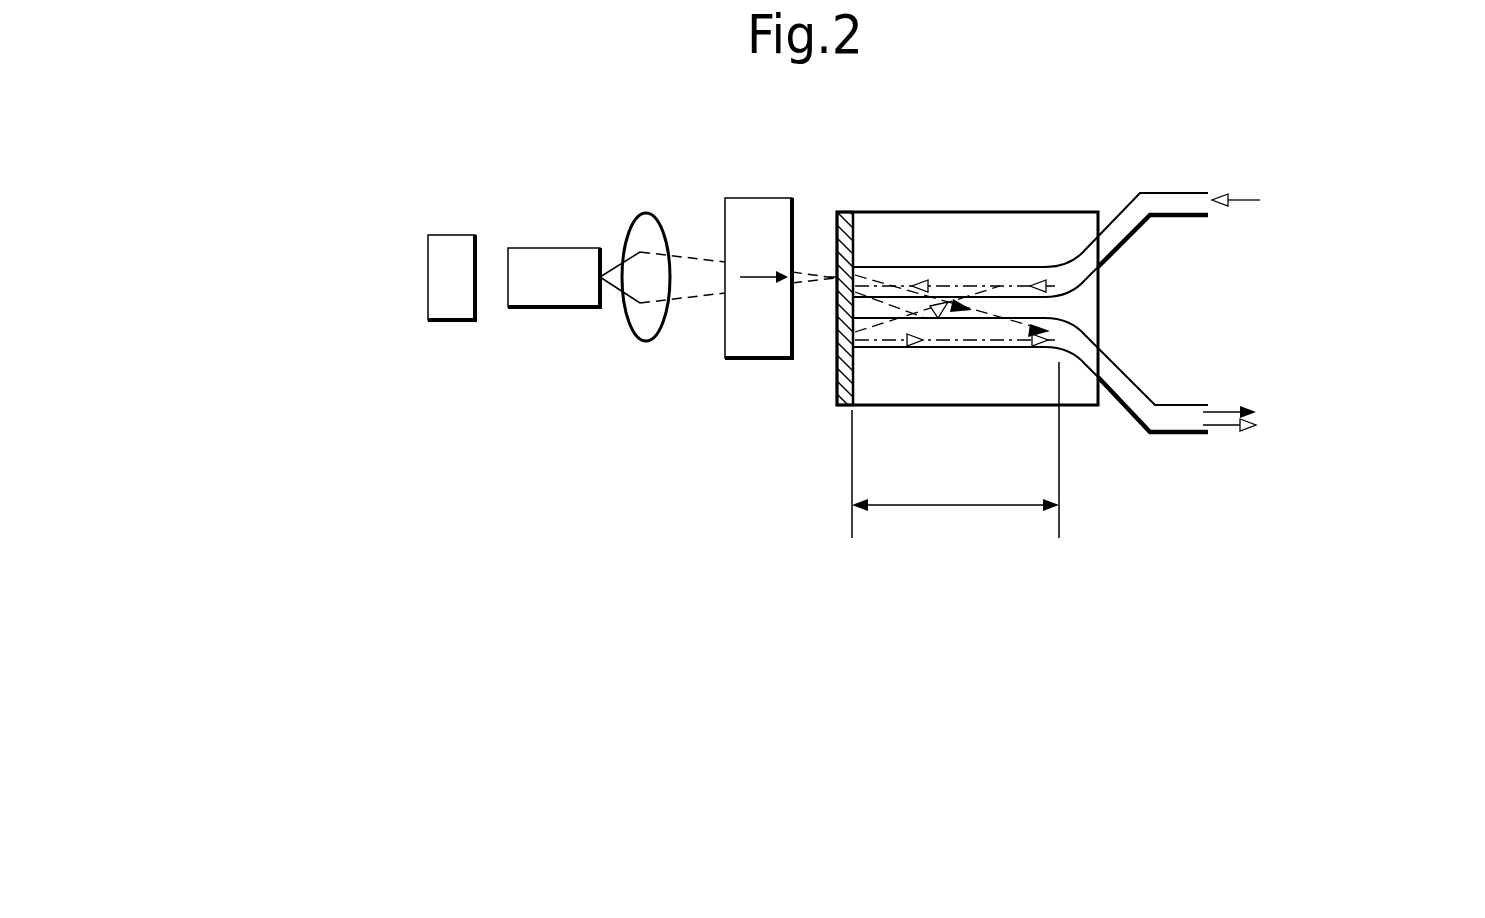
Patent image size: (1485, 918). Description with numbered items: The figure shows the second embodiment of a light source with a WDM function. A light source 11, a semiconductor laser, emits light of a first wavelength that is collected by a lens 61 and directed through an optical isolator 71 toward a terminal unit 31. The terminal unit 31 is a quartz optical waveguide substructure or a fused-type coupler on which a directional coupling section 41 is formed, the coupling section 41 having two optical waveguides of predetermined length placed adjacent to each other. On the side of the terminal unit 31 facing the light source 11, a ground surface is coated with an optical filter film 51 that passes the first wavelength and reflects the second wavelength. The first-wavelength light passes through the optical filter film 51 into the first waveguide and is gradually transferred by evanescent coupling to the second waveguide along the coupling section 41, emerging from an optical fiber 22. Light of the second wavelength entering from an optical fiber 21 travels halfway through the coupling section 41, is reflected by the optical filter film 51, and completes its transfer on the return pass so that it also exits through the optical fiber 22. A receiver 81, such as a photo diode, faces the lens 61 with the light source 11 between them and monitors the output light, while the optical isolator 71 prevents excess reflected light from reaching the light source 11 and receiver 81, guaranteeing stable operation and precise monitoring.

The light source 11 is at (580, 245).
The optical fiber 21 is at (1197, 187).
The optical fiber 22 is at (1163, 435).
The terminal unit 31 is at (1022, 290).
The coupling section 41 is at (955, 508).
The optical filter film 51 is at (838, 210).
The lens 61 is at (650, 343).
The optical isolator 71 is at (768, 360).
The receiver 81 is at (428, 275).